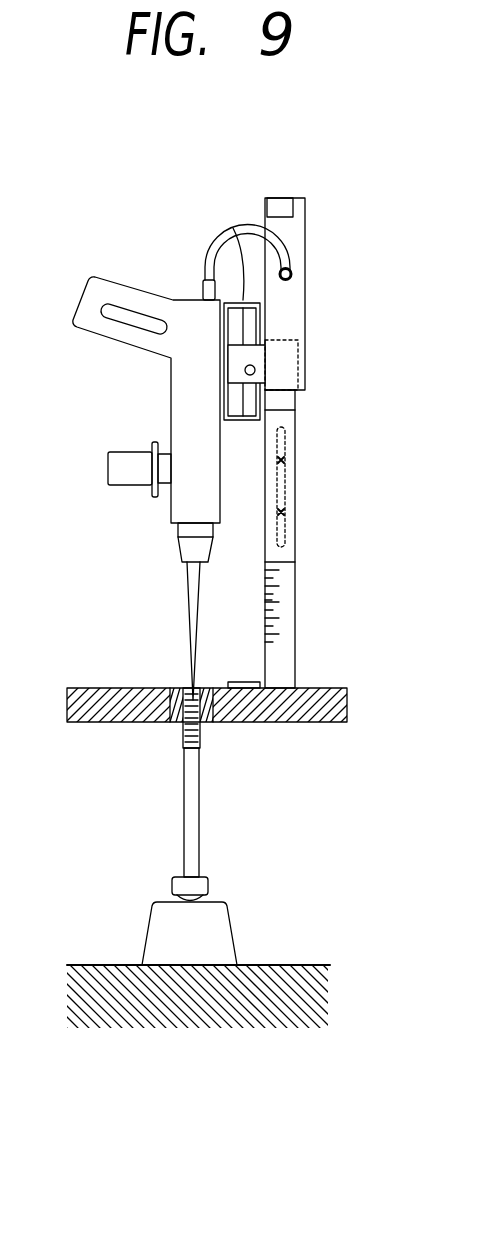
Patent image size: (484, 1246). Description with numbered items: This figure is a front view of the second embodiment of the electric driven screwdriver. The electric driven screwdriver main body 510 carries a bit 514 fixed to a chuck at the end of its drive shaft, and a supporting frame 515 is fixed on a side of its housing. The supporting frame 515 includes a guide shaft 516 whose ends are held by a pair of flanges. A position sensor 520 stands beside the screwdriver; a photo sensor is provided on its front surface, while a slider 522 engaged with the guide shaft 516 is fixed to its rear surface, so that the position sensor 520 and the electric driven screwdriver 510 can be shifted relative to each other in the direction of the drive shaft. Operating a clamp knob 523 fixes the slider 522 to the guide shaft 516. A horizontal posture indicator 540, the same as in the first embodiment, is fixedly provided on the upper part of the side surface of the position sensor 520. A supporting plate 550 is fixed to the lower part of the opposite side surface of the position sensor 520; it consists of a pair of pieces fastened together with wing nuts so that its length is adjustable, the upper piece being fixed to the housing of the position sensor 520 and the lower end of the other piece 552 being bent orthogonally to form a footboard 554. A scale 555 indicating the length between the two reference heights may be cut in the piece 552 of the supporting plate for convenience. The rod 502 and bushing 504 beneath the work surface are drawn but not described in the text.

The support rod 502 is at (201, 806).
The bushing 504 is at (178, 726).
The electric driven screwdriver main body 510 is at (176, 393).
The bit 514 is at (189, 622).
The supporting frame 515 is at (233, 228).
The guide shaft 516 is at (253, 322).
The position sensor 520 is at (305, 233).
The slider 522 is at (252, 352).
The clamp knob 523 is at (254, 373).
The horizontal posture indicator 540 is at (281, 206).
The supporting plate 550 is at (326, 463).
The piece 552 is at (297, 591).
The footboard 554 is at (248, 680).
The scale 555 is at (263, 600).